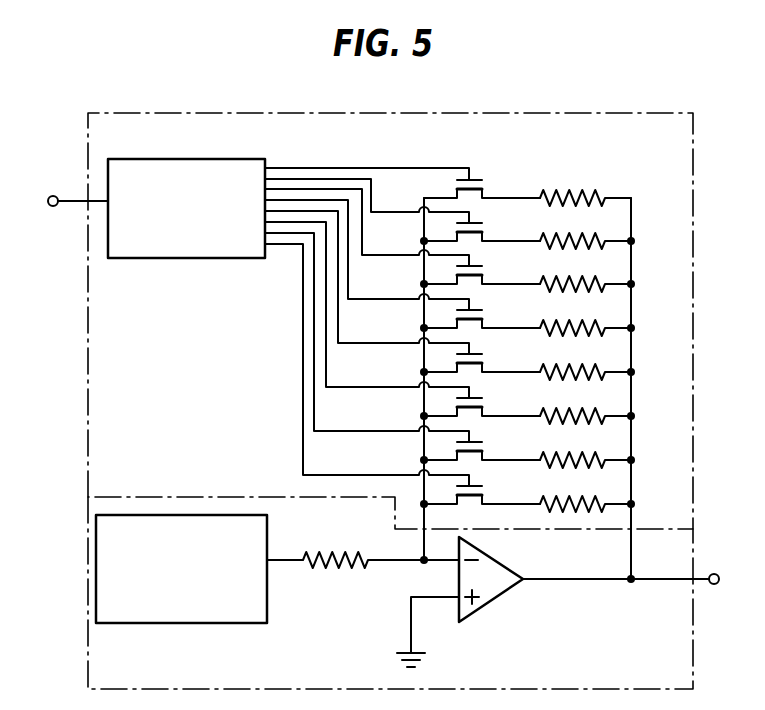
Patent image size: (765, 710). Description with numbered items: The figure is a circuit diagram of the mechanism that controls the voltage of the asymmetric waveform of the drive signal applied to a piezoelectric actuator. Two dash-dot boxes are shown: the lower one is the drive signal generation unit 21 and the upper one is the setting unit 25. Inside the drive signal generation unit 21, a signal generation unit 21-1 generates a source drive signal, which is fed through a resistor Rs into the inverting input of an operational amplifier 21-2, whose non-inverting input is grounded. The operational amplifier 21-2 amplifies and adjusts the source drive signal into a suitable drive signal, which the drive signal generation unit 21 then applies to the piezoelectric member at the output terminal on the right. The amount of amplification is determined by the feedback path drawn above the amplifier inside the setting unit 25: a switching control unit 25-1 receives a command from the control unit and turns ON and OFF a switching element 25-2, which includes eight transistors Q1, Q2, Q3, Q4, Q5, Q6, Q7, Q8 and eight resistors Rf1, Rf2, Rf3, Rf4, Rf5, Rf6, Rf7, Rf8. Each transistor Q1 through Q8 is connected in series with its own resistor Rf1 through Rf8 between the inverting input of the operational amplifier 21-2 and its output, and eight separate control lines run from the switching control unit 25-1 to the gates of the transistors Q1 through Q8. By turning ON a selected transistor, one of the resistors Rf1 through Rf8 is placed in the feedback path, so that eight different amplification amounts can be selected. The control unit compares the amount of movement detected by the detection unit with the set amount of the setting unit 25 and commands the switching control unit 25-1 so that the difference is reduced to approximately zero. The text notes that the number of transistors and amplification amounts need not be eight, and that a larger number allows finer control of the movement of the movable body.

The setting unit 25 is at (108, 316).
The switching control unit 25-1 is at (200, 159).
The switching element 25-2 is at (567, 166).
The drive signal generation unit 21 is at (88, 640).
The signal generation unit 21-1 is at (200, 623).
The operational amplifier 21-2 is at (495, 601).
The transistor Q1 is at (482, 183).
The transistor Q2 is at (482, 226).
The transistor Q3 is at (482, 269).
The transistor Q4 is at (482, 313).
The transistor Q5 is at (482, 357).
The transistor Q6 is at (482, 401).
The transistor Q7 is at (482, 445).
The transistor Q8 is at (482, 489).
The resistor Rf1 is at (604, 198).
The resistor Rf2 is at (604, 241).
The resistor Rf3 is at (604, 284).
The resistor Rf4 is at (604, 328).
The resistor Rf5 is at (604, 372).
The resistor Rf6 is at (604, 416).
The resistor Rf7 is at (604, 460).
The resistor Rf8 is at (604, 504).
The series input resistor Rs is at (363, 545).